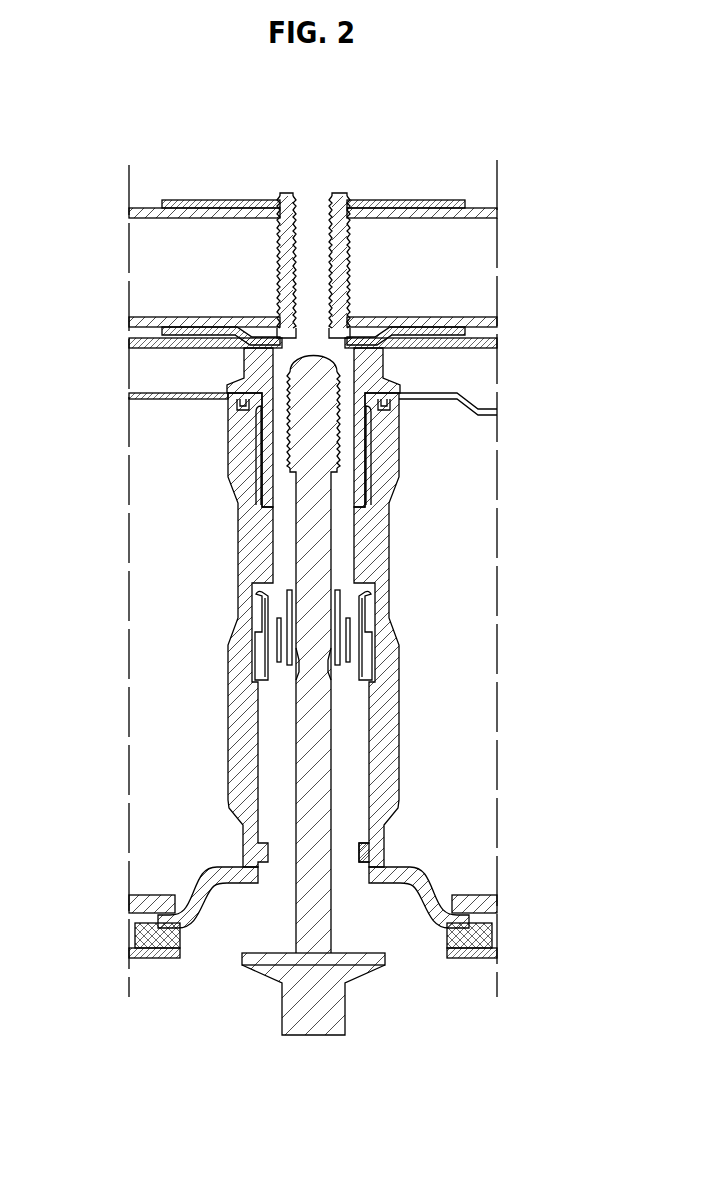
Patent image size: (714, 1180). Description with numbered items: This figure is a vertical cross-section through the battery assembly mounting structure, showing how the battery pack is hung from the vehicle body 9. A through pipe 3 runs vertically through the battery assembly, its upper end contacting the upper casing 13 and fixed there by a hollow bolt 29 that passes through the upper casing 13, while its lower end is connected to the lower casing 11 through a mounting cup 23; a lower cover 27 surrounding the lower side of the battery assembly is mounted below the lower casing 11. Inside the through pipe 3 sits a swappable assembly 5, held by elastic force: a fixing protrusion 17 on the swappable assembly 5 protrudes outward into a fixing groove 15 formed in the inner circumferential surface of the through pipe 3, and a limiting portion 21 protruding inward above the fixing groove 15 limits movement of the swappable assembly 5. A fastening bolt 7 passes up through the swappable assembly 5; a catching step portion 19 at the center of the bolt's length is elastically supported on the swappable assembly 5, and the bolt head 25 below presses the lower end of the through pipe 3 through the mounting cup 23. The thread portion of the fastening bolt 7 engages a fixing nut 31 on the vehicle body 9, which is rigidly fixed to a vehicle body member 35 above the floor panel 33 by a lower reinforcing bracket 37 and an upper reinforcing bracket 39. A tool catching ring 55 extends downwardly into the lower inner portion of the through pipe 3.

The through pipe 3 is at (395, 455).
The swappable assembly 5 is at (270, 620).
The fastening bolt 7 is at (316, 1041).
The vehicle body 9 is at (442, 165).
The lower casing 11 is at (497, 905).
The upper casing 13 is at (497, 410).
The fixing groove 15 is at (262, 586).
The fixing protrusion 17 is at (370, 590).
The catching step portion 19 is at (313, 665).
The limiting portion 21 is at (272, 553).
The mounting cup 23 is at (206, 926).
The bolt head 25 is at (332, 1012).
The lower cover 27 is at (497, 951).
The hollow bolt 29 is at (256, 358).
The fixing nut 31 is at (340, 193).
The floor panel 33 is at (497, 343).
The vehicle body member 35 is at (497, 215).
The lower reinforcing bracket 37 is at (180, 330).
The upper reinforcing bracket 39 is at (243, 200).
The tool catching ring 55 is at (343, 846).